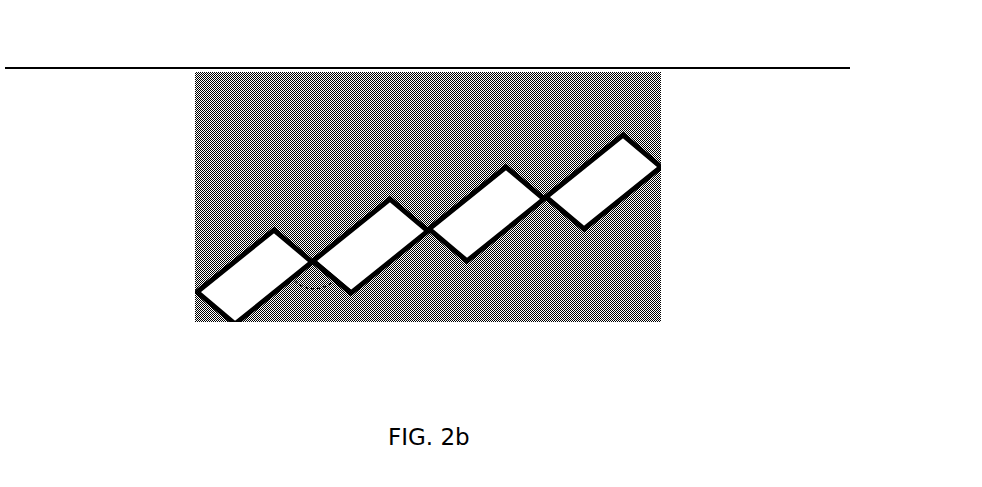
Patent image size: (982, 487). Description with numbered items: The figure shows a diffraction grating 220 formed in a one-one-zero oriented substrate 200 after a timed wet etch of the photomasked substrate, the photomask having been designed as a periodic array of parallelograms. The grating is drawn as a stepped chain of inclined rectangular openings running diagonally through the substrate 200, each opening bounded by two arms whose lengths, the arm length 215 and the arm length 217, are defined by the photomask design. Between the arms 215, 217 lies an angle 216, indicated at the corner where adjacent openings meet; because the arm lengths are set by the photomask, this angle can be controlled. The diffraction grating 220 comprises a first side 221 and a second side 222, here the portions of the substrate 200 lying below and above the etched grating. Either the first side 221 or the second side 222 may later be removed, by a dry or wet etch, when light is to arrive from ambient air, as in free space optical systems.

The substrate 200 is at (467, 209).
The arm length 215 is at (268, 290).
The angle 216 is at (314, 262).
The arm length 217 is at (343, 275).
The diffraction grating 220 is at (467, 200).
The first side 221 is at (542, 275).
The second side 222 is at (521, 97).